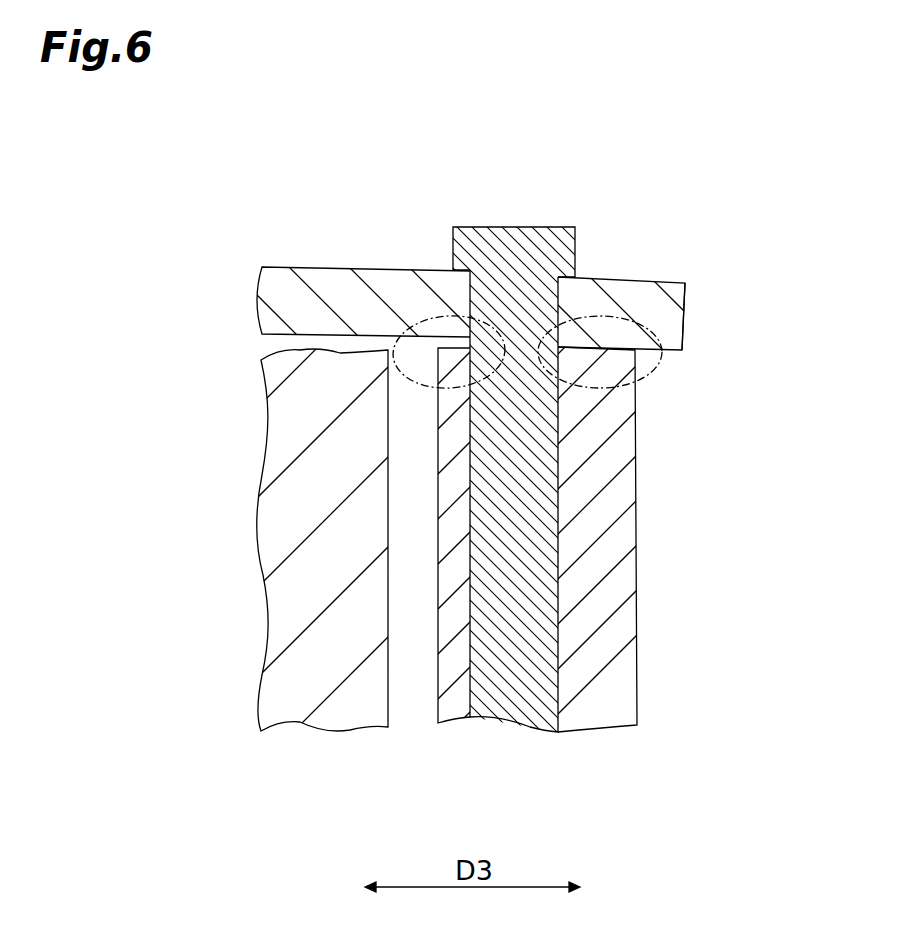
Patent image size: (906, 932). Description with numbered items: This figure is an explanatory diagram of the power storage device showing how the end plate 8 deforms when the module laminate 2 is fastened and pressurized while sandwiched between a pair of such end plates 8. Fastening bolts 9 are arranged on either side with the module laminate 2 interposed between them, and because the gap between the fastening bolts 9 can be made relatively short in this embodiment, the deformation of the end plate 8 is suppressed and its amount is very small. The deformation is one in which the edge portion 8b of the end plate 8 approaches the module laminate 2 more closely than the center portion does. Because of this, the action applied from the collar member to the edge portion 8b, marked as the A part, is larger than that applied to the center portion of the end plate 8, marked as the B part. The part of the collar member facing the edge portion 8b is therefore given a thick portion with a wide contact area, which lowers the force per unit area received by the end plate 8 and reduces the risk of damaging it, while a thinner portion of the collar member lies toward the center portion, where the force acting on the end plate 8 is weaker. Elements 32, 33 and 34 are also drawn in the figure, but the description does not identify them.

The module laminate 2 is at (276, 539).
The end plate 8 is at (622, 290).
The edge portion 8b is at (685, 318).
The fastening bolt 9 is at (515, 693).
The outer layer of shaft 32 is at (637, 494).
The core of shaft 33 is at (545, 555).
The joint portions 34 is at (570, 350).
The A part A is at (655, 372).
The B part B is at (411, 316).